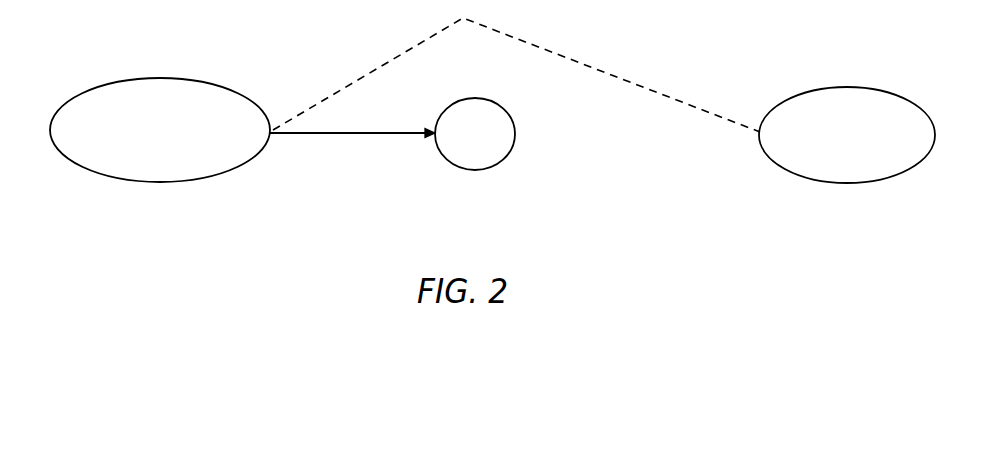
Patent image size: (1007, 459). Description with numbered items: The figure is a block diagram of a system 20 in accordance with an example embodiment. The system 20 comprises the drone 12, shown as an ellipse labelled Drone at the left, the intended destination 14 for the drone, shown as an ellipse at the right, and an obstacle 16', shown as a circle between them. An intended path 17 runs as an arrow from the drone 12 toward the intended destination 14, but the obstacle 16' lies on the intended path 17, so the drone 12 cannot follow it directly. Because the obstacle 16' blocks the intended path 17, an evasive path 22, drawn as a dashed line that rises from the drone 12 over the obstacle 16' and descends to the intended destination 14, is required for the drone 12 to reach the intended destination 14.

The drone or unmanned aerial vehicle 12 is at (95, 173).
The intended destination 14 is at (790, 167).
The obstacle 16' is at (456, 165).
The intended path 17 is at (333, 135).
The system 20 is at (765, 317).
The evasive path 22 is at (608, 68).